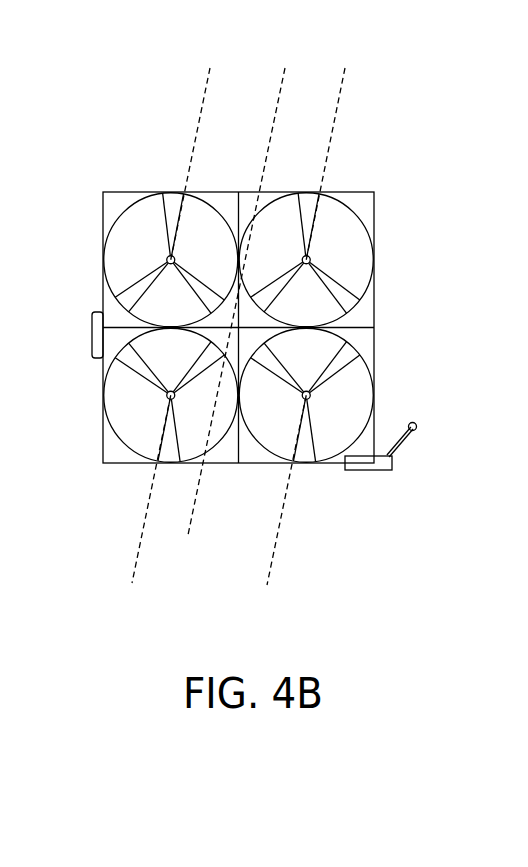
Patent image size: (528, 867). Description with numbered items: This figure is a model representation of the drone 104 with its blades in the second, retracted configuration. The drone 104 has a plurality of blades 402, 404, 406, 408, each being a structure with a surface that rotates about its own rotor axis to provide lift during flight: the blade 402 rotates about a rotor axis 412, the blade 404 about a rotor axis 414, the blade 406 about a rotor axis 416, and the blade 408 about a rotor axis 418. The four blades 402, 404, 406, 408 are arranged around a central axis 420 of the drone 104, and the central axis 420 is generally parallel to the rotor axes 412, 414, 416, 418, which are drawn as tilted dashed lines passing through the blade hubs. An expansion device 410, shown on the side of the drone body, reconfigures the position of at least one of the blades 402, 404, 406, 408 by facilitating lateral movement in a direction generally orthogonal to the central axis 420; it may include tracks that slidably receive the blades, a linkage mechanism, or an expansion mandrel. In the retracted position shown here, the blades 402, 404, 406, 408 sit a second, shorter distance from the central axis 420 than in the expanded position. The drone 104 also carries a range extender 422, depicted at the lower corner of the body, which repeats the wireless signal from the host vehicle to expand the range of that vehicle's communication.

The drone 104 is at (418, 82).
The blade 402 is at (102, 250).
The blade 404 is at (375, 257).
The blade 406 is at (102, 408).
The blade 408 is at (375, 390).
The expansion device 410 is at (90, 335).
The rotor axis 412 is at (195, 128).
The rotor axis 414 is at (329, 163).
The rotor axis 416 is at (147, 513).
The rotor axis 418 is at (287, 503).
The central axis 420 is at (284, 85).
The range extender 422 is at (380, 470).